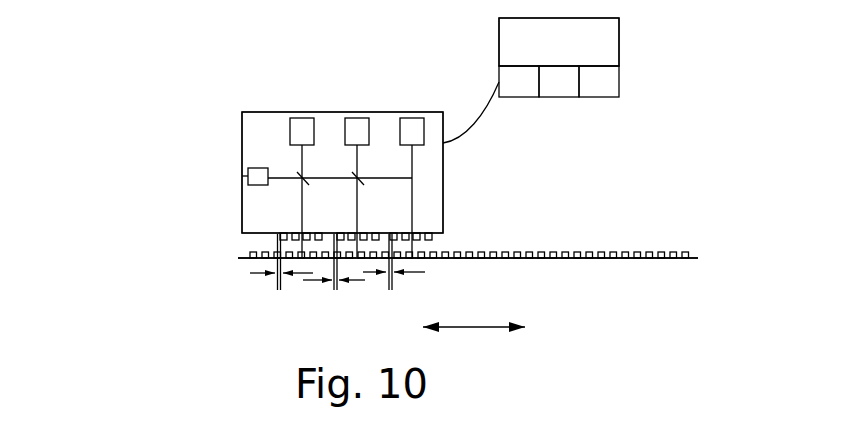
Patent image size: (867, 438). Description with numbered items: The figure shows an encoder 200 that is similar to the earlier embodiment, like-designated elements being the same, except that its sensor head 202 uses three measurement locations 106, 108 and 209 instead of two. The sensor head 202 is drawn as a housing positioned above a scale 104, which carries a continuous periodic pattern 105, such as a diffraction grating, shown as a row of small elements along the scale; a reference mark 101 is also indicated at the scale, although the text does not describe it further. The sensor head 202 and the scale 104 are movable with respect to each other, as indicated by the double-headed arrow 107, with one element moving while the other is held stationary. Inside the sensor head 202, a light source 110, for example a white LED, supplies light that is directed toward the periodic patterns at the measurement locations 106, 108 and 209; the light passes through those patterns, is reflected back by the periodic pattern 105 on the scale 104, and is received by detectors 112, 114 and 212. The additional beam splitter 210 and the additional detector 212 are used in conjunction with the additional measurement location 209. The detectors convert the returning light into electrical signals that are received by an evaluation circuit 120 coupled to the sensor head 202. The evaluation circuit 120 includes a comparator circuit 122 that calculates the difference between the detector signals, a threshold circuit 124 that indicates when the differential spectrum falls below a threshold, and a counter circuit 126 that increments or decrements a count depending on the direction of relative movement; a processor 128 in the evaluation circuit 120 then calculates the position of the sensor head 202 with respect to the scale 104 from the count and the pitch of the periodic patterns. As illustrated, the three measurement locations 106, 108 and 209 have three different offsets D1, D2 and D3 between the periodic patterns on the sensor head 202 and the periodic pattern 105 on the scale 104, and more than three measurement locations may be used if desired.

The encoder 200 is at (175, 87).
The sensor head 202 is at (443, 172).
The detector 112 is at (290, 130).
The detector 114 is at (345, 130).
The detector 212 is at (405, 118).
The beam splitter 210 is at (412, 178).
The light source 110 is at (248, 176).
The evaluation circuit 120 is at (475, 33).
The processor 128 is at (619, 50).
The comparator circuit 122 is at (523, 97).
The threshold circuit 124 is at (555, 97).
The counter circuit 126 is at (595, 97).
The measurement location 106 is at (287, 222).
The measurement location 108 is at (343, 222).
The measurement location 209 is at (418, 218).
The substrate 101 is at (218, 248).
The scale 104 is at (627, 258).
The periodic pattern 105 is at (613, 233).
The arrow 107 is at (473, 327).
The offset D1 is at (281, 273).
The offset D2 is at (334, 273).
The offset D3 is at (394, 273).